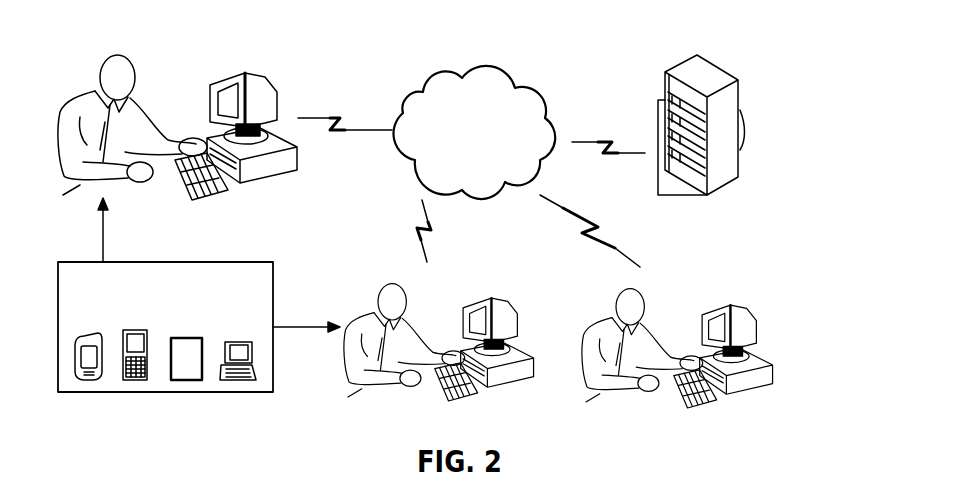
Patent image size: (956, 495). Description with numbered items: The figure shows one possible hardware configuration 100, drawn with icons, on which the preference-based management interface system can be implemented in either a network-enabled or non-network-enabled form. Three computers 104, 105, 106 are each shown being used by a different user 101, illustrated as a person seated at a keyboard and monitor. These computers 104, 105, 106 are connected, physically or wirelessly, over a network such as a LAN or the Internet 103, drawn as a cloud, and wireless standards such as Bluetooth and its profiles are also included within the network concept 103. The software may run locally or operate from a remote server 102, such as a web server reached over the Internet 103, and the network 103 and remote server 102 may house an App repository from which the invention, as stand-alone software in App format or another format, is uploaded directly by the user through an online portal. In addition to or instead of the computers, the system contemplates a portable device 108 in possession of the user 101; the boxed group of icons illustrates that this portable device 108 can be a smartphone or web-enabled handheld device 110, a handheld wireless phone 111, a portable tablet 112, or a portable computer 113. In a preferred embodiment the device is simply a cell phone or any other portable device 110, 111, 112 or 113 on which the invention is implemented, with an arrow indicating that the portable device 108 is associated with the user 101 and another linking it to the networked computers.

The hardware configuration 100 is at (588, 37).
The user 101 is at (72, 90).
The remote server 102 is at (713, 67).
The Internet/network 103 is at (493, 169).
The computer 104 is at (280, 80).
The computer 105 is at (515, 313).
The computer 106 is at (758, 318).
The portable device 108 is at (130, 262).
The smartphone 110 is at (78, 337).
The handheld device 111 is at (135, 330).
The portable tablet 112 is at (178, 338).
The portable computer 113 is at (247, 342).